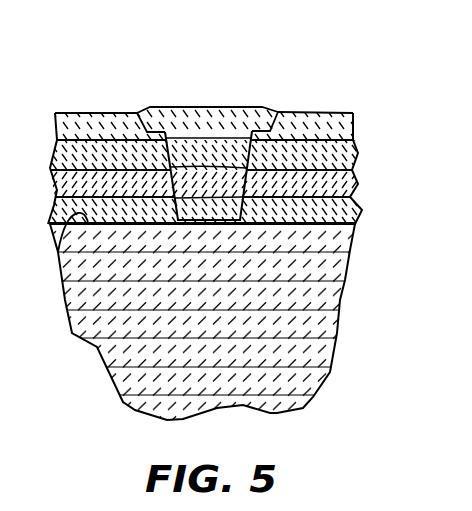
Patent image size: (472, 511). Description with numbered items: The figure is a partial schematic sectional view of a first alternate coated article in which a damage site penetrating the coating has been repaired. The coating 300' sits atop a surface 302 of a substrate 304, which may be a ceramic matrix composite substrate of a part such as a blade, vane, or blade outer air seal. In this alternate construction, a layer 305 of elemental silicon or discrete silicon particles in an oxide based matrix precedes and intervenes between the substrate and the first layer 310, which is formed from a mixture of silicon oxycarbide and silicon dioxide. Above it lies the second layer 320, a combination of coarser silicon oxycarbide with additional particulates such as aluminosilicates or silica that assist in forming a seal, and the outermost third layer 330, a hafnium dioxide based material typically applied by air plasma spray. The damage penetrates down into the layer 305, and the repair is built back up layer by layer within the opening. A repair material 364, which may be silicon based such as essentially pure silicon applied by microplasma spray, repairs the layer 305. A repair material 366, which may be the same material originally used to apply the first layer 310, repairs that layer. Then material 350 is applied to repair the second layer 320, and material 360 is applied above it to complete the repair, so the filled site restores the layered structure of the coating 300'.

The coating 300' is at (242, 169).
The surface 302 is at (58, 252).
The substrate 304 is at (351, 356).
The layer 305 is at (115, 213).
The first layer 310 is at (80, 178).
The second layer 320 is at (302, 150).
The third layer 330 is at (340, 122).
The material 350 is at (237, 153).
The material 360 is at (217, 122).
The repair material 364 is at (225, 207).
The repair material 366 is at (192, 173).